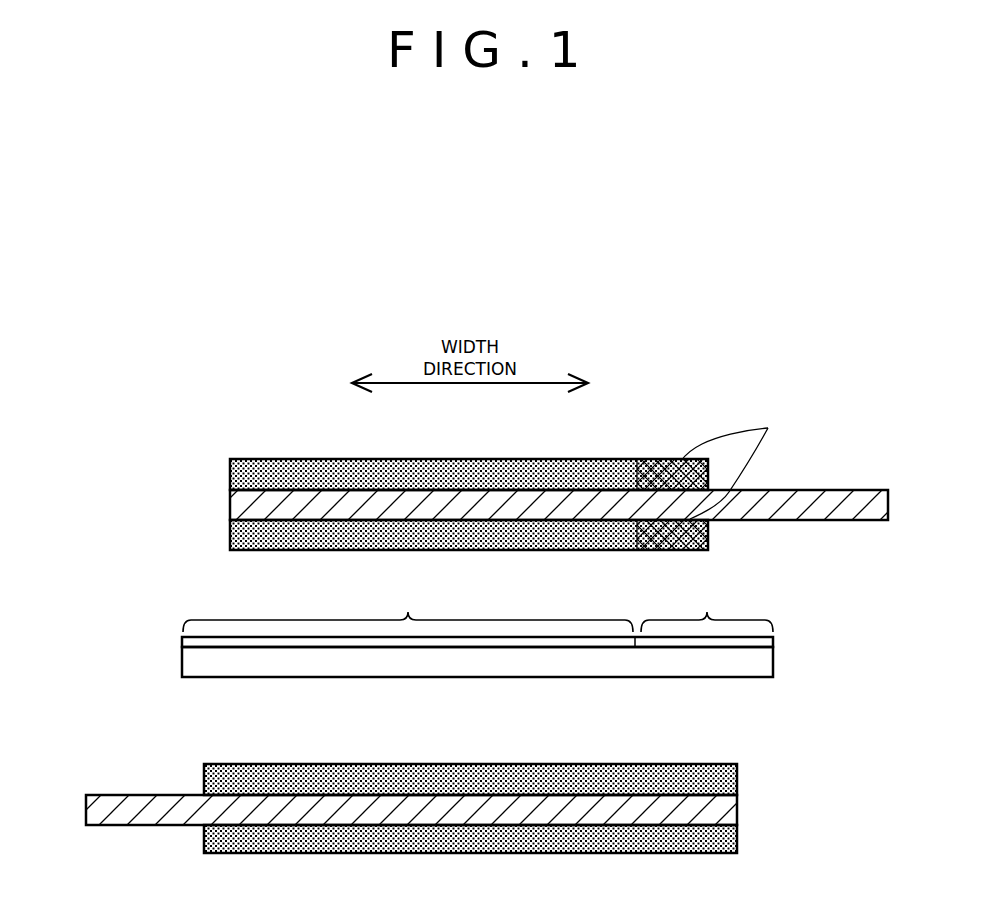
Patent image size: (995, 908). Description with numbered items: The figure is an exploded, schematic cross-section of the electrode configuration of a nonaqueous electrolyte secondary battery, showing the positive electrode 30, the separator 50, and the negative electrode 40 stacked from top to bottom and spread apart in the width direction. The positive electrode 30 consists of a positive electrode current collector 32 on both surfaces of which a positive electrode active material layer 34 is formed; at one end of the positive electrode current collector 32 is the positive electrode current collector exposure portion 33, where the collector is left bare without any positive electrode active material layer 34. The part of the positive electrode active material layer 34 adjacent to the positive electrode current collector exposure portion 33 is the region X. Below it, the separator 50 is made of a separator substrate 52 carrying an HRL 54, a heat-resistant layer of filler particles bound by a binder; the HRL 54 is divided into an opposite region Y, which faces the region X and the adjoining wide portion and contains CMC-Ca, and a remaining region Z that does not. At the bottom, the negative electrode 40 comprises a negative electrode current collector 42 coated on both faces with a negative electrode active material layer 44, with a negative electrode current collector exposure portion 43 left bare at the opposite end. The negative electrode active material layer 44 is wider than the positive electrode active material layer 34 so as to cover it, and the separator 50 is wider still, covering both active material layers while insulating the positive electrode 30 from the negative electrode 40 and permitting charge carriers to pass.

The positive electrode 30 is at (143, 455).
The positive electrode current collector 32 is at (240, 507).
The positive electrode current collector exposure portion 33 is at (712, 525).
The positive electrode active material layer 34 is at (240, 477).
The negative electrode 40 is at (823, 758).
The negative electrode current collector 42 is at (728, 812).
The negative electrode current collector exposure portion 43 is at (148, 798).
The negative electrode active material layer 44 is at (728, 780).
The separator 50 is at (98, 608).
The separator substrate 52 is at (182, 662).
The HRL 54 is at (182, 639).